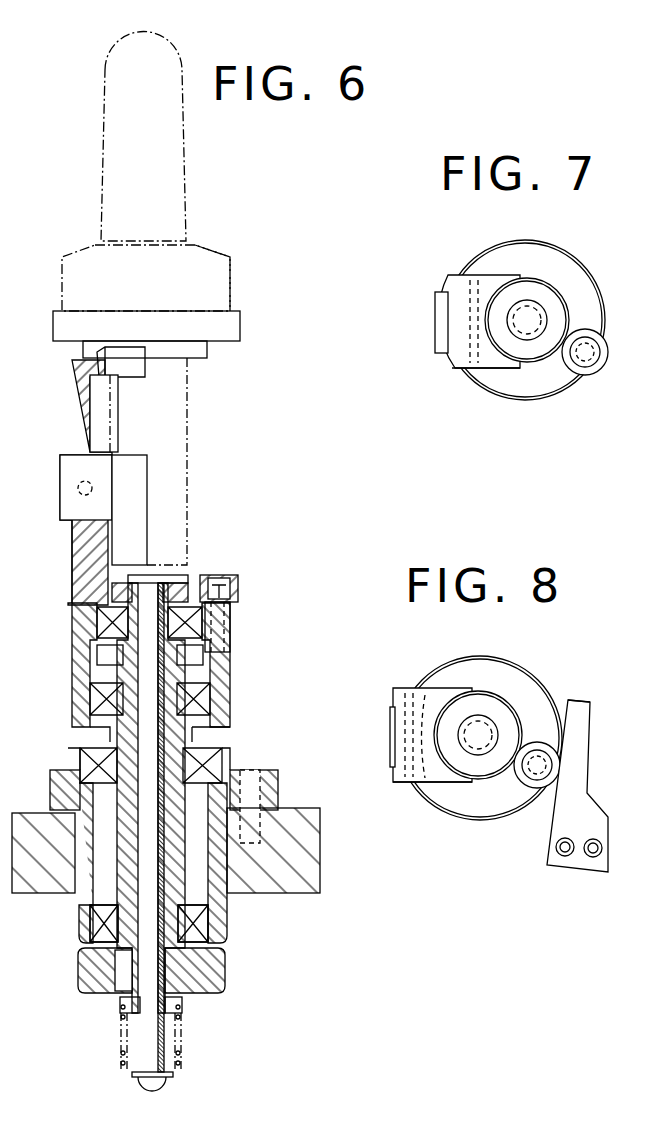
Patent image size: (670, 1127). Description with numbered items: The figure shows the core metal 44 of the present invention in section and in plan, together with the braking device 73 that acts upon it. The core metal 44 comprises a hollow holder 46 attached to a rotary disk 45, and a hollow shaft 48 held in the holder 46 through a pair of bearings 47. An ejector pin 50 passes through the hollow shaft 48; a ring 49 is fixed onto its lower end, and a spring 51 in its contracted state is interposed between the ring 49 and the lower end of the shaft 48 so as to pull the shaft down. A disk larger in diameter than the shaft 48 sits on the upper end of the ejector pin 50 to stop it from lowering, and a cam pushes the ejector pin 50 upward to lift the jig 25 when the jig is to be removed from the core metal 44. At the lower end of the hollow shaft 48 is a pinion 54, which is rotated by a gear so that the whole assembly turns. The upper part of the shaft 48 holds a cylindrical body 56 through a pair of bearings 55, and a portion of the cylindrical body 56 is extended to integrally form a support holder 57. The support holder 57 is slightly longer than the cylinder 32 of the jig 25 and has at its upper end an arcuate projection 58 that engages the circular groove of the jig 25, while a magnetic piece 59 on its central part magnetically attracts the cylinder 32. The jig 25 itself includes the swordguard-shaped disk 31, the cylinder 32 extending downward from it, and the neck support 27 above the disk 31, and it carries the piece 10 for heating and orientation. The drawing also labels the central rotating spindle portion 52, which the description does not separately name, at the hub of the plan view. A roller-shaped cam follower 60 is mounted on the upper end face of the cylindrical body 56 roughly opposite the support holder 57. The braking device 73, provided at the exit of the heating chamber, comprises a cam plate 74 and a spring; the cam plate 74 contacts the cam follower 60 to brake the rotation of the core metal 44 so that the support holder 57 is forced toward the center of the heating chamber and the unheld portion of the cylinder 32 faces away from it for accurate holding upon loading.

In FIG. 6, the piece 10 is at (105, 64).
In FIG. 6, the jig 25 is at (61, 270).
In FIG. 6, the neck support 27 is at (232, 271).
In FIG. 6, the disk 31 is at (241, 327).
In FIG. 6, the cylinder 32 is at (188, 425).
In FIG. 6, the core metal 44 is at (71, 415).
In FIG. 7, the core metal 44 is at (448, 275).
In FIG. 8, the core metal 44 is at (405, 687).
In FIG. 6, the rotary disk 45 is at (292, 826).
In FIG. 6, the hollow holder 46 is at (216, 892).
In FIG. 6, the bearings 47 is at (88, 758).
In FIG. 6, the hollow shaft 48 is at (170, 930).
In FIG. 6, the ring 49 is at (133, 1073).
In FIG. 6, the ejector pin 50 is at (152, 1038).
In FIG. 6, the spring 51 is at (124, 1008).
In FIG. 6, the spindle 52 is at (176, 582).
In FIG. 7, the spindle 52 is at (539, 290).
In FIG. 8, the spindle 52 is at (498, 720).
In FIG. 6, the pinion 54 is at (227, 980).
In FIG. 6, the bearings 55 is at (200, 705).
In FIG. 6, the cylindrical body 56 is at (231, 673).
In FIG. 7, the cylindrical body 56 is at (599, 287).
In FIG. 8, the cylindrical body 56 is at (450, 657).
In FIG. 6, the support holder 57 is at (78, 553).
In FIG. 7, the support holder 57 is at (452, 369).
In FIG. 8, the support holder 57 is at (408, 781).
In FIG. 6, the arcuate projection 58 is at (125, 347).
In FIG. 6, the magnetic piece 59 is at (61, 485).
In FIG. 7, the magnetic piece 59 is at (434, 310).
In FIG. 8, the magnetic piece 59 is at (390, 712).
In FIG. 6, the cam follower 60 is at (239, 594).
In FIG. 7, the cam follower 60 is at (592, 376).
In FIG. 8, the cam follower 60 is at (538, 789).
In FIG. 8, the braking device 73 is at (593, 793).
In FIG. 8, the cam plate 74 is at (584, 700).